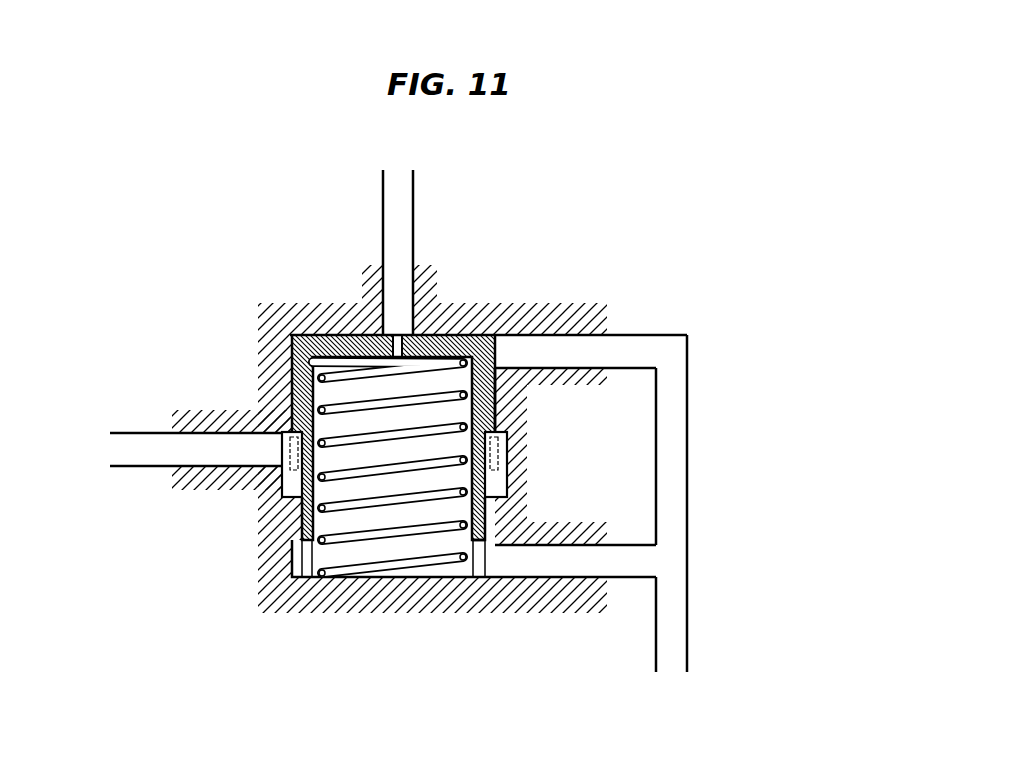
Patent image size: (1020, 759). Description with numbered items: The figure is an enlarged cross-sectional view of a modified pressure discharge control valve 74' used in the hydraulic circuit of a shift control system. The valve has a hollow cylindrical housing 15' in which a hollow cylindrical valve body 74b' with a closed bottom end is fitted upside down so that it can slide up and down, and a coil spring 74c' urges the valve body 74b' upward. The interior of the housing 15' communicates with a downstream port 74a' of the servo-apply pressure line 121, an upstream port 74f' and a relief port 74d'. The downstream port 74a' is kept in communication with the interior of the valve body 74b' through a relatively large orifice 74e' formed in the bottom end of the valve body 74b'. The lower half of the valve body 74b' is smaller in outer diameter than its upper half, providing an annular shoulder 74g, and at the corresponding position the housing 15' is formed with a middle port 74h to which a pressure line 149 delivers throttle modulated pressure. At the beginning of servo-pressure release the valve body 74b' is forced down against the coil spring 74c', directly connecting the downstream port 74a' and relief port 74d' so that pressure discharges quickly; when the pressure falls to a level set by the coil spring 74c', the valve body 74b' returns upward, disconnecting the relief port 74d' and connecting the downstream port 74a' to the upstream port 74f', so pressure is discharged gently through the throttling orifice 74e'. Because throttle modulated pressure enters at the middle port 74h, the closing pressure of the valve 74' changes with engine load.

The hollow cylindrical housing 15' is at (423, 469).
The pressure discharge control valve 74' is at (470, 444).
The downstream port 74a' is at (433, 284).
The hollow cylindrical valve body 74b' is at (337, 409).
The coil spring 74c' is at (398, 523).
The relief port 74d' is at (540, 399).
The orifice 74e' is at (337, 295).
The upstream port 74f' is at (479, 596).
The annular shoulder 74g is at (282, 448).
The middle port 74h is at (265, 450).
The servo-apply pressure line 121 is at (403, 215).
The pressure line 149 is at (162, 448).